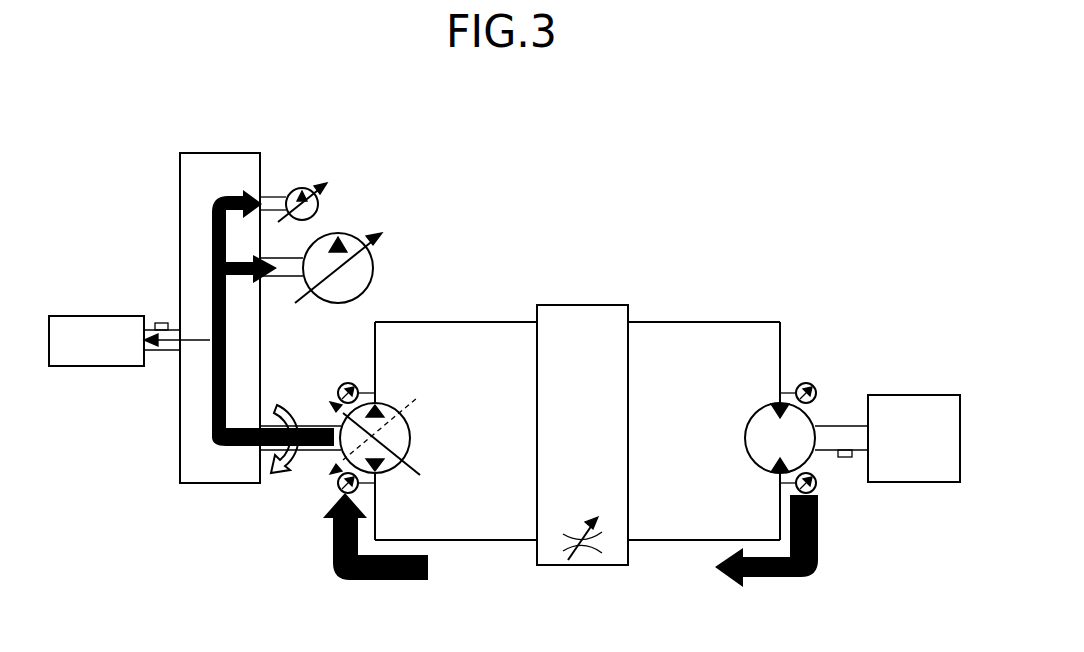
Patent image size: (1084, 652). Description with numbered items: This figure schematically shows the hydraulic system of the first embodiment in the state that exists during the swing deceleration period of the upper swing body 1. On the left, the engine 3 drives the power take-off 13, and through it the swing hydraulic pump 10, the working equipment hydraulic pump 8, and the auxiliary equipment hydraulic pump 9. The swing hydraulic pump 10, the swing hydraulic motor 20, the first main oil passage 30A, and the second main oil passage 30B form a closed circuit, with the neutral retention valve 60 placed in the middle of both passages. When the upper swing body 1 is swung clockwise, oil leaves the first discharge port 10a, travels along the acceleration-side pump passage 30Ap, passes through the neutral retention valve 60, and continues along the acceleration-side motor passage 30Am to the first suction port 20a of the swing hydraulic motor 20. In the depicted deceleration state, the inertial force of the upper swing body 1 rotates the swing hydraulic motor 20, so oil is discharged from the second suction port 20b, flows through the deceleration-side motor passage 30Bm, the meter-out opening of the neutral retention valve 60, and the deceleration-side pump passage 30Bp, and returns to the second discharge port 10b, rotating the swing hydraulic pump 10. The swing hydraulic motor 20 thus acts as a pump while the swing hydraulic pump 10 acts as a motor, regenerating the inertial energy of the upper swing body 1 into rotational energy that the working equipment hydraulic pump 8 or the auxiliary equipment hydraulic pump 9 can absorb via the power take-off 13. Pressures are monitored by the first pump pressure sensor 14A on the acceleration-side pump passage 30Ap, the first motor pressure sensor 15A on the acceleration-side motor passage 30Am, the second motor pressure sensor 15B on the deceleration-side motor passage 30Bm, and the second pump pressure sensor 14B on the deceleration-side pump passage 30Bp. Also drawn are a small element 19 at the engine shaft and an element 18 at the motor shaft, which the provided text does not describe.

The upper swing body 1 is at (933, 395).
The engine 3 is at (97, 316).
The working equipment hydraulic pump 8 is at (345, 233).
The auxiliary equipment hydraulic pump 9 is at (302, 188).
The swing hydraulic pump 10 is at (361, 439).
The first discharge port 10a is at (378, 400).
The second discharge port 10b is at (378, 476).
The power take-off 13 is at (225, 153).
The first pump pressure sensor 14A is at (348, 383).
The second pump pressure sensor 14B is at (343, 491).
The first motor pressure sensor 15A is at (808, 383).
The second motor pressure sensor 15B is at (813, 494).
The motor speed sensor 18 is at (845, 457).
The engine speed sensor 19 is at (161, 323).
The swing hydraulic motor 20 is at (795, 439).
The first suction port 20a is at (778, 400).
The second suction port 20b is at (778, 477).
The first main oil passage 30A is at (595, 294).
The acceleration-side pump passage 30Ap is at (428, 321).
The acceleration-side motor passage 30Am is at (735, 321).
The second main oil passage 30B is at (577, 581).
The deceleration-side pump passage 30Bp is at (458, 542).
The deceleration-side motor passage 30Bm is at (655, 542).
The neutral retention valve 60 is at (598, 305).